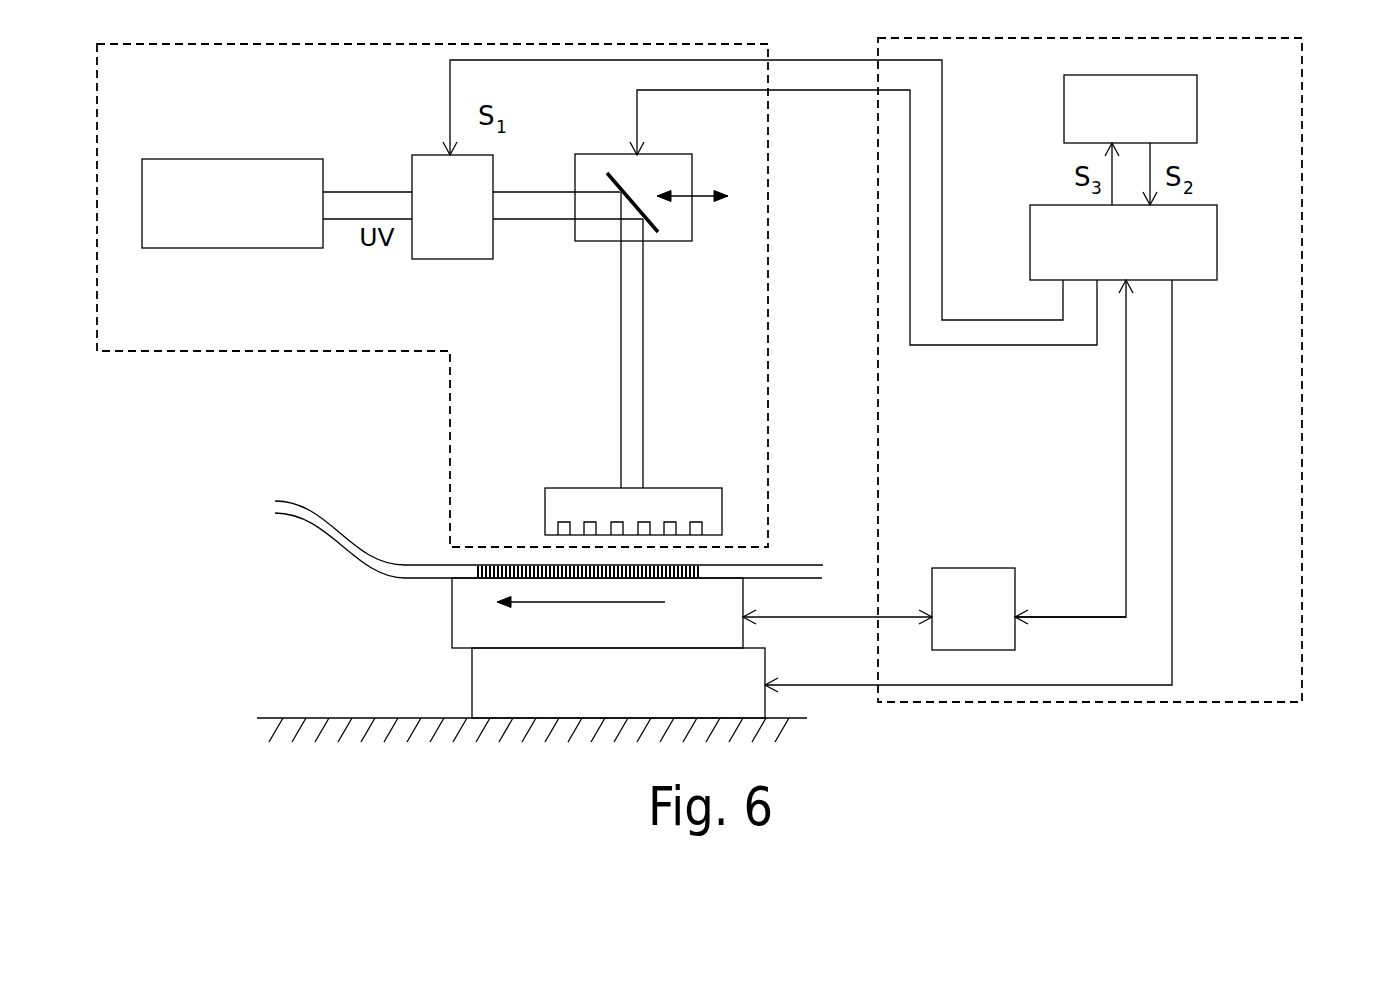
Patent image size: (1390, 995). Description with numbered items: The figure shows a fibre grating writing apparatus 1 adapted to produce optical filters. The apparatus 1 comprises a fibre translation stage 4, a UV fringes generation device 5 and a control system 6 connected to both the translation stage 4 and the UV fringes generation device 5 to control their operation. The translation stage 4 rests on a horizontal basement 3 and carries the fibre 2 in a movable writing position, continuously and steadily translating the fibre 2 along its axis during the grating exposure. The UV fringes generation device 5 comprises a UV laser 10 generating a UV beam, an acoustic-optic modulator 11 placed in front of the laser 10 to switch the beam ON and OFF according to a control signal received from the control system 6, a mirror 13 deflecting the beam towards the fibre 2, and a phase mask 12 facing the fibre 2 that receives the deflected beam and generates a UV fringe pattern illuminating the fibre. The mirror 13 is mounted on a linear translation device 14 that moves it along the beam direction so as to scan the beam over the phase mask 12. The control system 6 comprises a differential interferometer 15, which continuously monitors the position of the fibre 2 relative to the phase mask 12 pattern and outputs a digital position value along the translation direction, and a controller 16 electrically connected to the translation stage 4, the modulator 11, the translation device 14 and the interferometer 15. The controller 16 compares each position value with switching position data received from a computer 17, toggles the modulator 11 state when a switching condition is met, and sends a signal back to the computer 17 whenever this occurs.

The fibre grating writing apparatus 1 is at (235, 548).
The fibre 2 is at (788, 562).
The horizontal basement 3 is at (310, 717).
The fibre translation stage 4 is at (440, 657).
The UV fringes generation device 5 is at (768, 247).
The control system 6 is at (1293, 263).
The UV laser 10 is at (313, 172).
The acoustic-optic modulator 11 is at (468, 247).
The phase mask 12 is at (658, 470).
The mirror 13 is at (652, 232).
The linear translation device 14 is at (657, 162).
The differential interferometer 15 is at (983, 567).
The controller 16 is at (1203, 233).
The computer 17 is at (1187, 117).